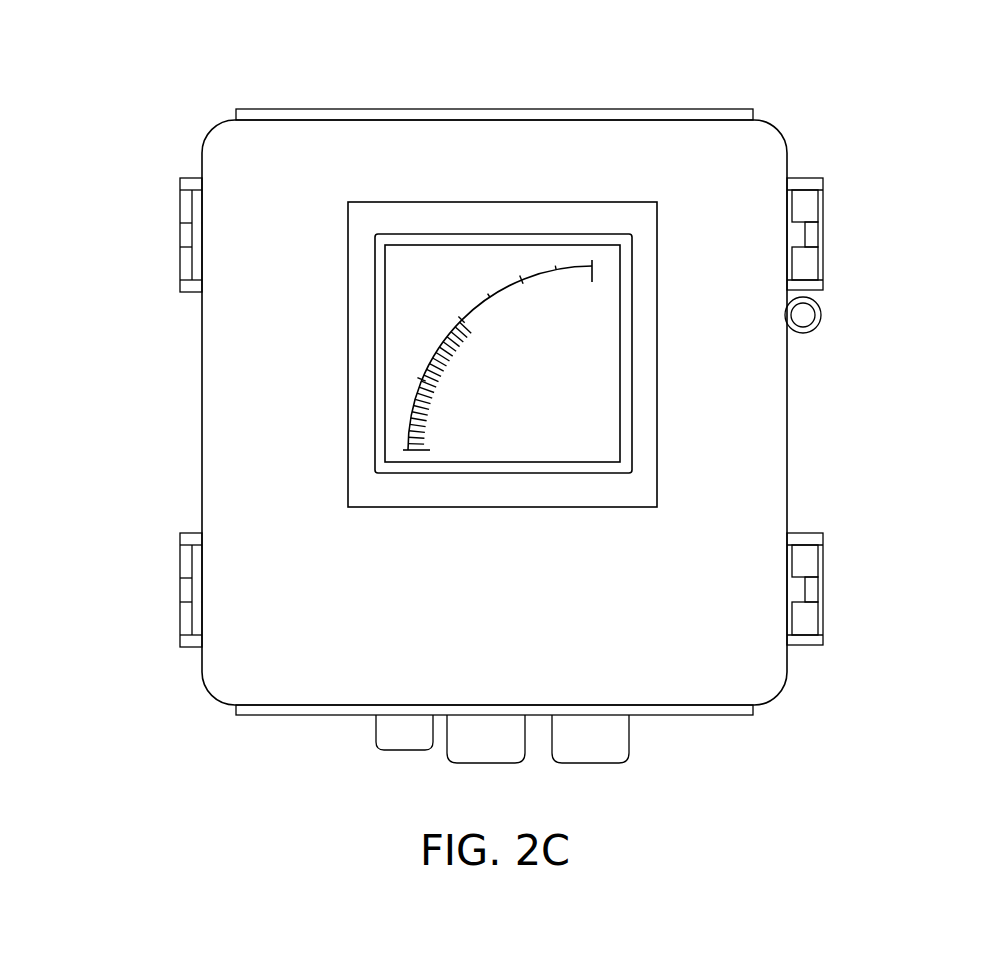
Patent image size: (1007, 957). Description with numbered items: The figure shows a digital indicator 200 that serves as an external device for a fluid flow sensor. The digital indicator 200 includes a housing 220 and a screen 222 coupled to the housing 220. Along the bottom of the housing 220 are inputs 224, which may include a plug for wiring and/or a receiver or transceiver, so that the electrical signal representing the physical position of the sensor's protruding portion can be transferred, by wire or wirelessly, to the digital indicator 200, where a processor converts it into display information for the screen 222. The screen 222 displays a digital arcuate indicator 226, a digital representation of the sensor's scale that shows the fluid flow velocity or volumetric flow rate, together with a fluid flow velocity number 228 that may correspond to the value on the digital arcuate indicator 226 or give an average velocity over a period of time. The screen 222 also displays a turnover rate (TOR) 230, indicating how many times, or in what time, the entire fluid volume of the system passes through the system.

The digital indicator 200 is at (170, 21).
The housing 220 is at (218, 458).
The screen 222 is at (604, 353).
The inputs 224 is at (555, 770).
The digital arcuate indicator 226 is at (430, 353).
The fluid flow velocity number 228 is at (580, 422).
The turnover rate (TOR) 230 is at (450, 240).